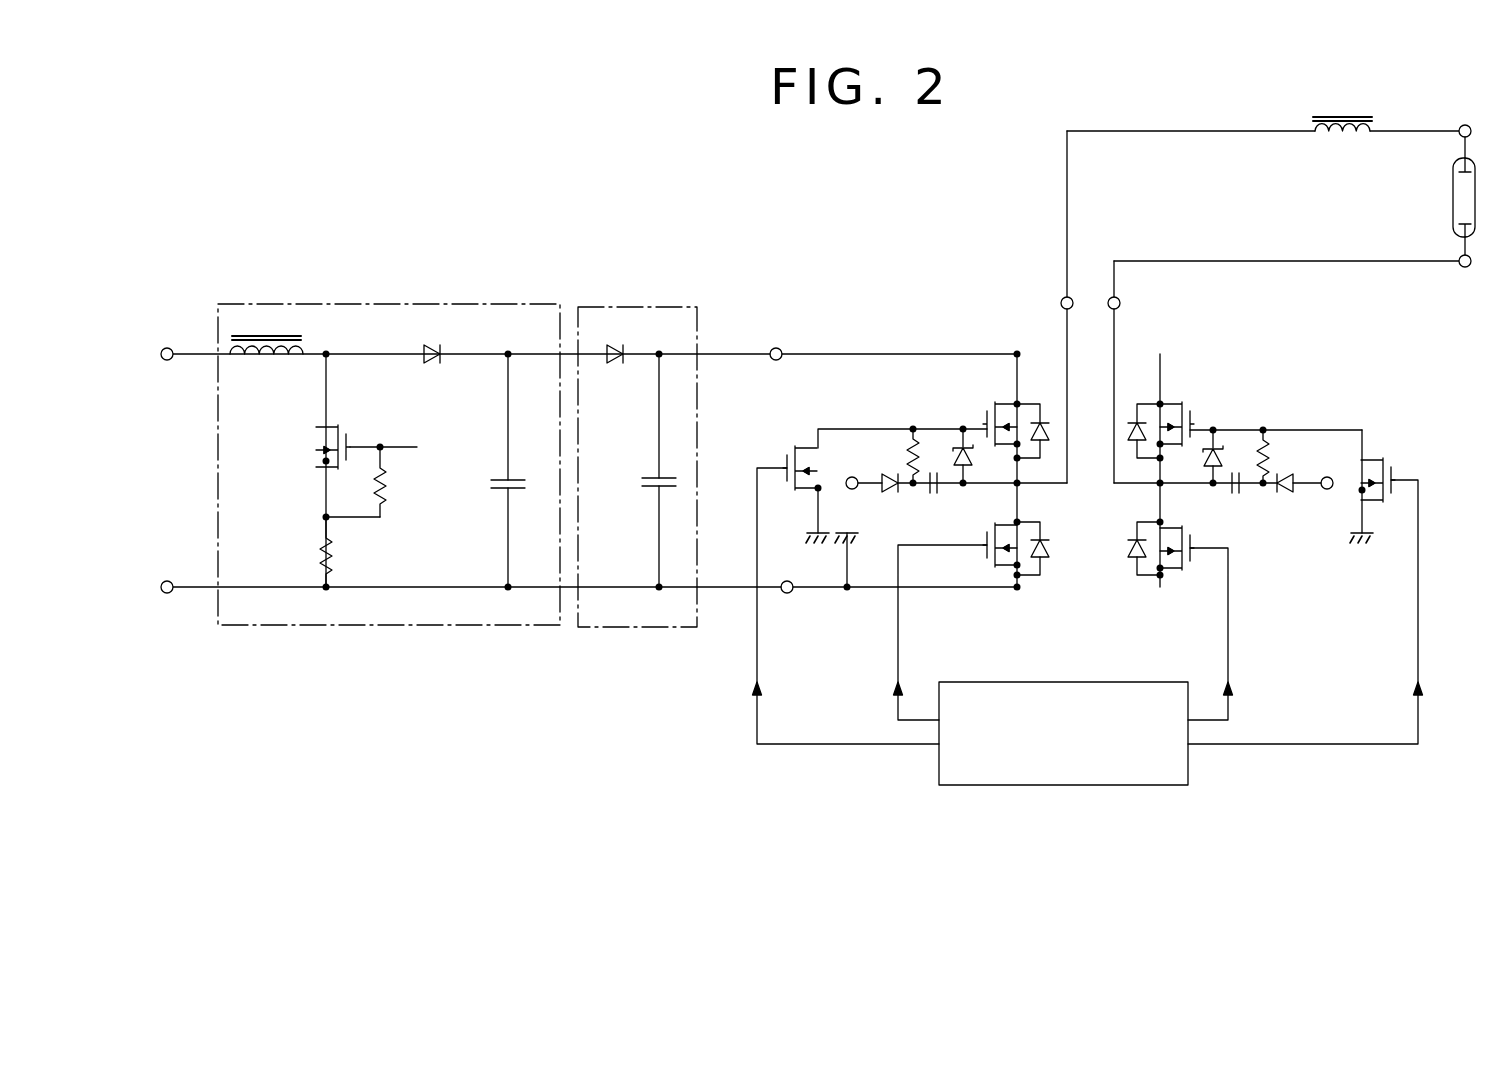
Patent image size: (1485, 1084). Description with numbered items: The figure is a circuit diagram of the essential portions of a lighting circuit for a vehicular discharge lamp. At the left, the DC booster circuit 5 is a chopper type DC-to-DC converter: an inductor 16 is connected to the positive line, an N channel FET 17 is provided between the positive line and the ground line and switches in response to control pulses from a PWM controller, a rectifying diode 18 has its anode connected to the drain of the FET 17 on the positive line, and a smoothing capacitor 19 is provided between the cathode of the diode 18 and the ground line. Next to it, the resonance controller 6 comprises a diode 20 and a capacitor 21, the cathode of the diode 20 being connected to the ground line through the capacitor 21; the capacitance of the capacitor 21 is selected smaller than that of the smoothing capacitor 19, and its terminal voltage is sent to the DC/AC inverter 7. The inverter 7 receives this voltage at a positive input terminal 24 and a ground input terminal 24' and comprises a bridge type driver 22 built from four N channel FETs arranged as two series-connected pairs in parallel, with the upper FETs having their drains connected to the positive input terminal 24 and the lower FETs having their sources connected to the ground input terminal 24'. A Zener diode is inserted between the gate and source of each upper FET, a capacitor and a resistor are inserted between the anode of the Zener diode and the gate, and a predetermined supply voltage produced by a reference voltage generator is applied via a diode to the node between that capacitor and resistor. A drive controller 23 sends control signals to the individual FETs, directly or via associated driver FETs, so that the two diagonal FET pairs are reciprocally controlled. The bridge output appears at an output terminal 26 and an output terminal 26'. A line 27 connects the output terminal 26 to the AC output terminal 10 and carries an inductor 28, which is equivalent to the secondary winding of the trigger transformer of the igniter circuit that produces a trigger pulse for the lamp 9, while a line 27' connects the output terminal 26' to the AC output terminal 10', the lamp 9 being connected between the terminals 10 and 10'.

The DC booster circuit 5 is at (415, 303).
The resonance controller 6 is at (648, 303).
The DC/AC inverter 7 is at (918, 310).
The lamp 9 is at (1452, 207).
The AC output terminal 10 is at (1458, 113).
The AC output terminal 10' is at (1461, 285).
The inductor 16 is at (263, 365).
The N channel FET 17 is at (324, 440).
The rectifying diode 18 is at (441, 362).
The smoothing capacitor 19 is at (497, 490).
The diode 20 is at (614, 366).
The capacitor 21 is at (650, 489).
The bridge type driver 22 is at (1080, 536).
The drive controller 23 is at (1075, 787).
The positive input terminal 24 is at (595, 324).
The ground input terminal 24' is at (595, 618).
The output terminal 26 is at (1036, 307).
The output terminal 26' is at (1149, 372).
The line 27 is at (1191, 100).
The line 27' is at (1286, 230).
The inductor 28 is at (1348, 142).